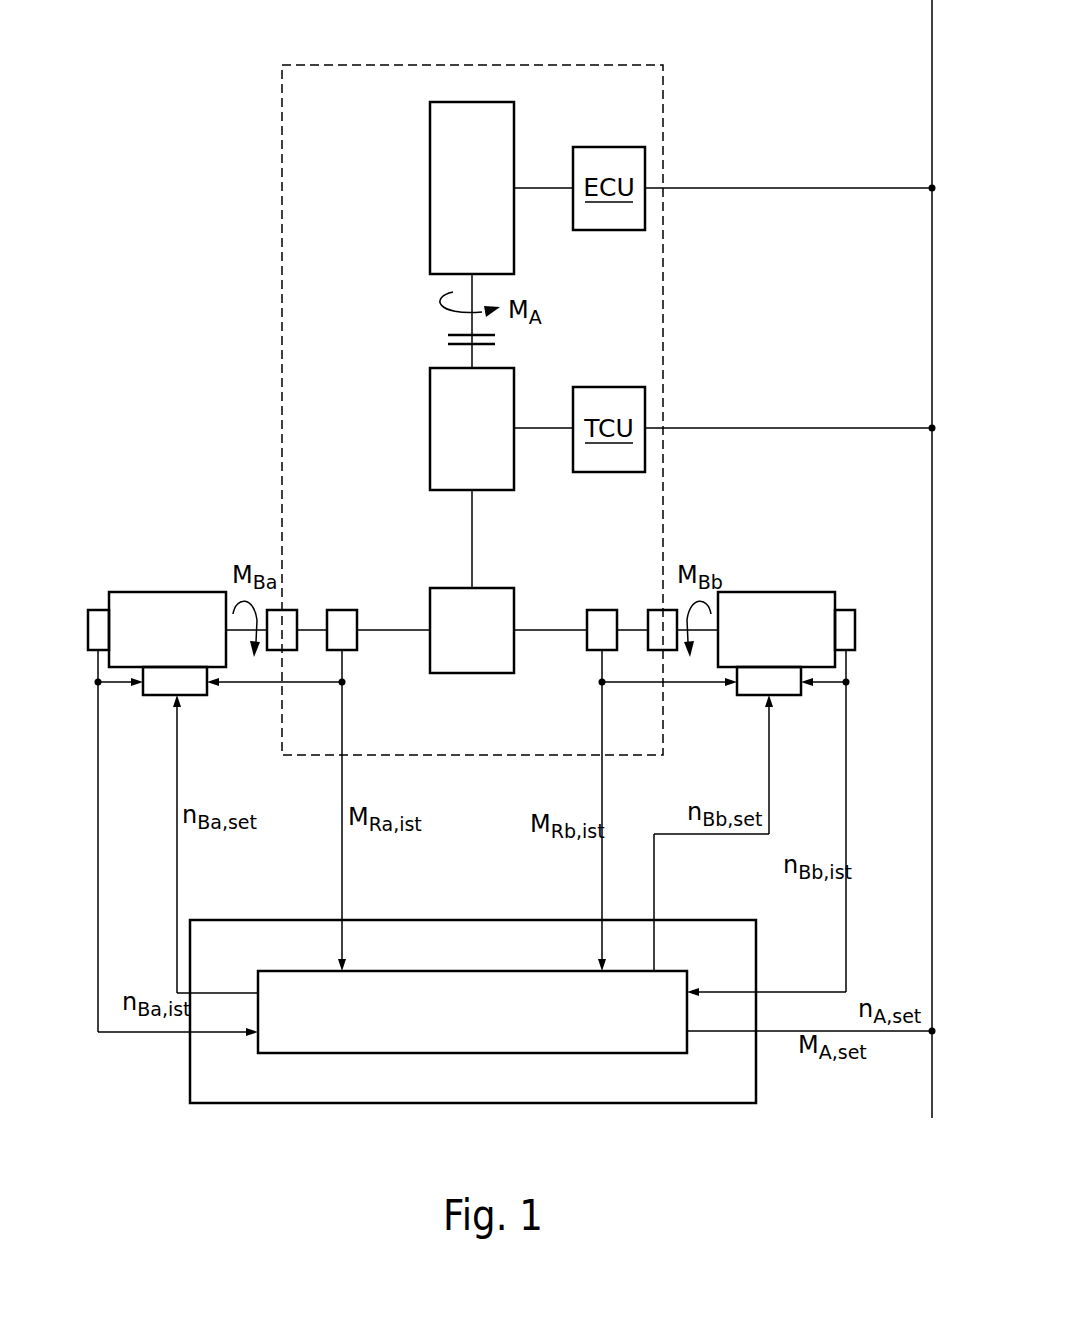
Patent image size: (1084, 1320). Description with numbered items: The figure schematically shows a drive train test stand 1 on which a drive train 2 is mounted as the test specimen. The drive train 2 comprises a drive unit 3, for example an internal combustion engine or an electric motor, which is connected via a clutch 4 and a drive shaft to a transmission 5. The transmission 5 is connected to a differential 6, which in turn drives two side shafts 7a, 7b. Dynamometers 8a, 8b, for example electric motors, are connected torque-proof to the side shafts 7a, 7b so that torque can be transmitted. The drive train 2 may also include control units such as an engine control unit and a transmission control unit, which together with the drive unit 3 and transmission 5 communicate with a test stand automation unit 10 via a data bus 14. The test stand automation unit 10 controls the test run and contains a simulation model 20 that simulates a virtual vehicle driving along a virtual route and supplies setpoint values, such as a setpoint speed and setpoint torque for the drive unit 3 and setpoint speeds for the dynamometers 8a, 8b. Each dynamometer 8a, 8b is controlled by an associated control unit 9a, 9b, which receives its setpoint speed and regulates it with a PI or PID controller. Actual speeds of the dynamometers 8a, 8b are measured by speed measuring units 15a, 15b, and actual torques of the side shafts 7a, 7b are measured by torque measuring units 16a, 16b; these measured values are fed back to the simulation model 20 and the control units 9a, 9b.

The drive train test stand 1 is at (816, 276).
The drive train 2 is at (662, 462).
The drive unit 3 is at (462, 206).
The clutch 4 is at (455, 335).
The transmission 5 is at (462, 440).
The differential 6 is at (462, 648).
The side shaft 7a is at (408, 632).
The side shaft 7b is at (533, 632).
The dynamometer 8a is at (185, 644).
The dynamometer 8b is at (794, 644).
The control unit 9a is at (160, 682).
The control unit 9b is at (757, 682).
The test stand automation unit 10 is at (218, 968).
The data bus 14 is at (930, 82).
The speed measuring unit 15a is at (98, 627).
The speed measuring unit 15b is at (846, 627).
The torque measuring unit 16a is at (345, 608).
The torque measuring unit 16b is at (603, 608).
The simulation model 20 is at (443, 1016).